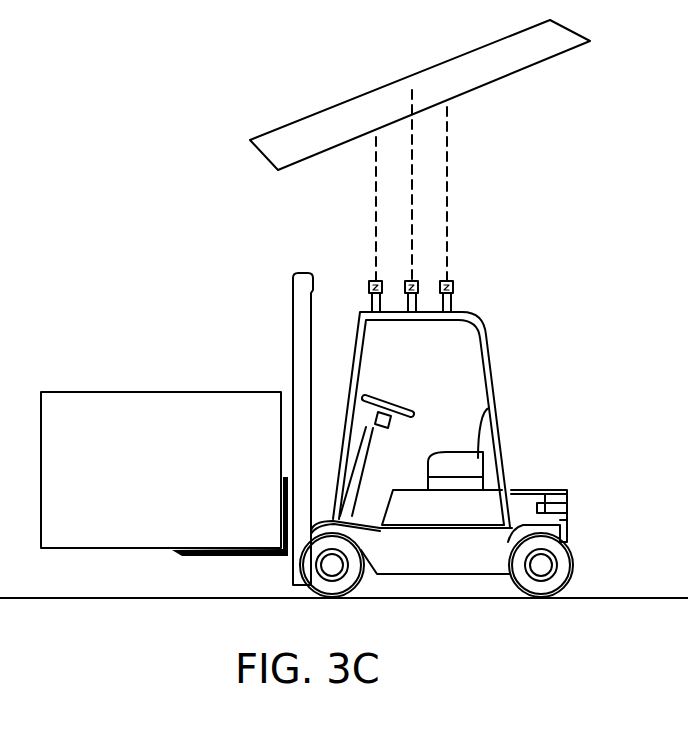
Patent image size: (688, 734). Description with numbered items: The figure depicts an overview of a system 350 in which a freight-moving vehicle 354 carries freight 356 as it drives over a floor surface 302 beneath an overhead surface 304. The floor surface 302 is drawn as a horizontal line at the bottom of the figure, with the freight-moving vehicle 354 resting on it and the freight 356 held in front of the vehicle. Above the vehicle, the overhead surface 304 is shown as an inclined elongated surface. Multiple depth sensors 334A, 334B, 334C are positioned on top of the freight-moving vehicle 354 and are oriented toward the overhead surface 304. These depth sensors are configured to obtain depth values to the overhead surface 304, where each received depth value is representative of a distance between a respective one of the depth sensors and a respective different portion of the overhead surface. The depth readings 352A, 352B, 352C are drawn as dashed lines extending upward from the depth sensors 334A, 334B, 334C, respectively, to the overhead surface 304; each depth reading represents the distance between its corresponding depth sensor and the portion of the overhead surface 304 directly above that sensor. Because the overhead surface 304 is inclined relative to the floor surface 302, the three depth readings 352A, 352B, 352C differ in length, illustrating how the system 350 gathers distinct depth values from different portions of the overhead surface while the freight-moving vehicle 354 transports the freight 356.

The system 350 is at (80, 156).
The overhead surface 304 is at (403, 79).
The depth reading 352A is at (376, 204).
The depth reading 352B is at (447, 203).
The depth reading 352C is at (412, 148).
The depth sensor 334A is at (369, 294).
The depth sensor 334B is at (454, 298).
The depth sensor 334C is at (419, 294).
The freight 356 is at (160, 391).
The freight-moving vehicle 354 is at (568, 517).
The floor surface 302 is at (581, 599).